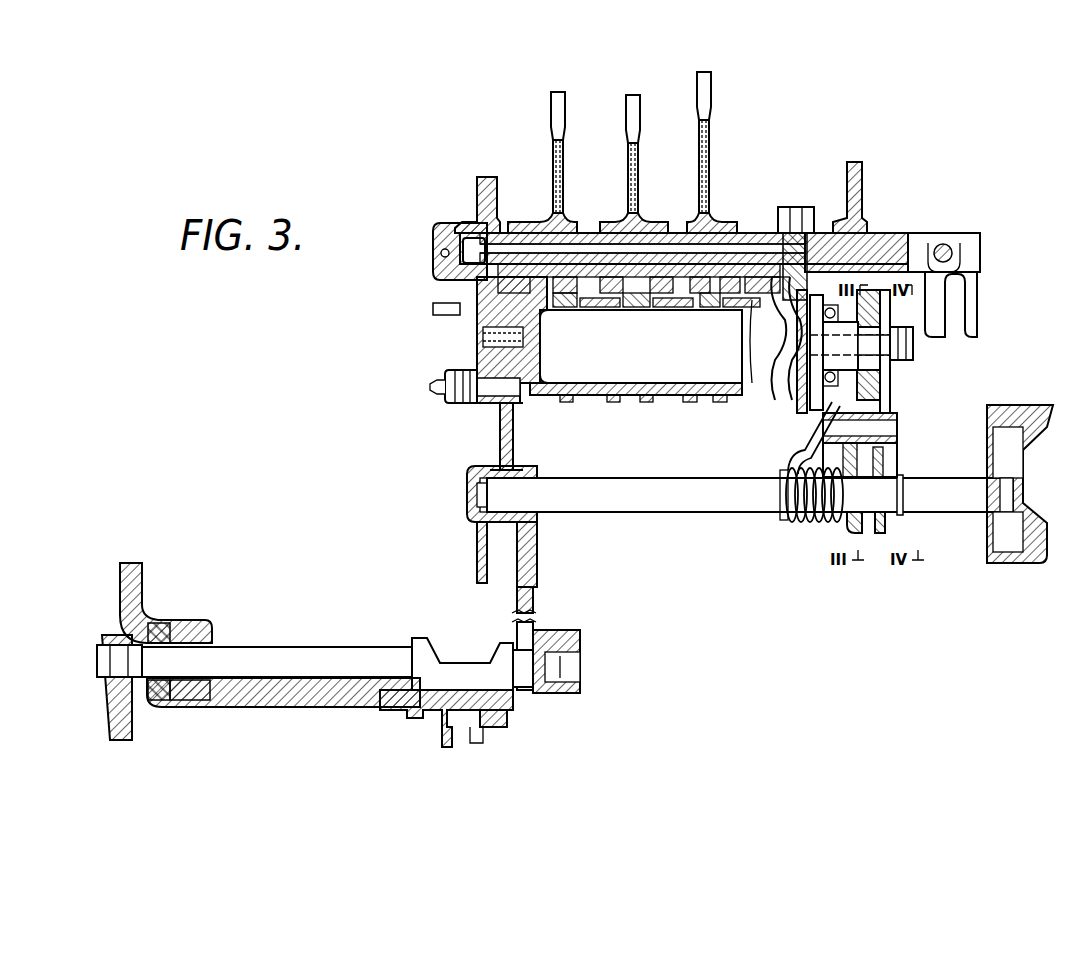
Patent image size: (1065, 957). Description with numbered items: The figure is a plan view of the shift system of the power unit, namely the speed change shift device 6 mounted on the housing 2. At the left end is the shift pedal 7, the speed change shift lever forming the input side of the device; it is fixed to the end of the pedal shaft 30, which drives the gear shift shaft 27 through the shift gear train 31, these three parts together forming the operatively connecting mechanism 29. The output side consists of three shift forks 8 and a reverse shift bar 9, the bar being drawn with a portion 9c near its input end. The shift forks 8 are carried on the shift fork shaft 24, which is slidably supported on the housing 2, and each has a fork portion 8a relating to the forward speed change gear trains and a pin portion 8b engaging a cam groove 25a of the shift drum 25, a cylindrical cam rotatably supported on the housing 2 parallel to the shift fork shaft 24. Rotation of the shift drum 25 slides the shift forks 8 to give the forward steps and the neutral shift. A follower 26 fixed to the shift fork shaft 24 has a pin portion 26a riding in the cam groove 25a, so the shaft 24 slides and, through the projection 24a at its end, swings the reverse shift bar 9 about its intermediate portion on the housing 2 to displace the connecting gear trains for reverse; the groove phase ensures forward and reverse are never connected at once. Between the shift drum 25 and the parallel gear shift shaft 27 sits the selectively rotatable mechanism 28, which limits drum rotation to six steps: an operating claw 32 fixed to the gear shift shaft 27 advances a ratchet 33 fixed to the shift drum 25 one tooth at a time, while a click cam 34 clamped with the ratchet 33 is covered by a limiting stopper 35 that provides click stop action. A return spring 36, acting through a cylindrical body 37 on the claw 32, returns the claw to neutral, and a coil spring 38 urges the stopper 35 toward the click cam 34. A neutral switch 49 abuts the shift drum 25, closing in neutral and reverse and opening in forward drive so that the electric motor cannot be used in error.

The housing 2 is at (472, 312).
The speed change shift device 6 is at (478, 445).
The shift pedal 7 is at (108, 708).
The shift fork 8 is at (563, 176).
The fork portion 8a is at (565, 102).
The pin portion 8b is at (565, 308).
The reverse shift bar 9 is at (962, 322).
The bracket slot 9c is at (960, 256).
The shift fork shaft 24 is at (757, 233).
The projection 24a is at (941, 244).
The shift drum 25 is at (672, 395).
The cam groove 25a is at (590, 302).
The follower 26 is at (815, 230).
The pin portion 26a is at (730, 285).
The gear shift shaft 27 is at (697, 500).
The selectively rotatable mechanism 28 is at (902, 400).
The operatively connecting mechanism 29 is at (508, 557).
The pedal shaft 30 is at (313, 663).
The shift gear train 31 is at (537, 565).
The operating claw 32 is at (890, 467).
The ratchet 33 is at (880, 318).
The click cam 34 is at (905, 372).
The limiting stopper 35 is at (892, 384).
The return spring 36 is at (808, 522).
The cylindrical body 37 is at (900, 422).
The coil spring 38 is at (897, 517).
The neutral switch 49 is at (430, 385).